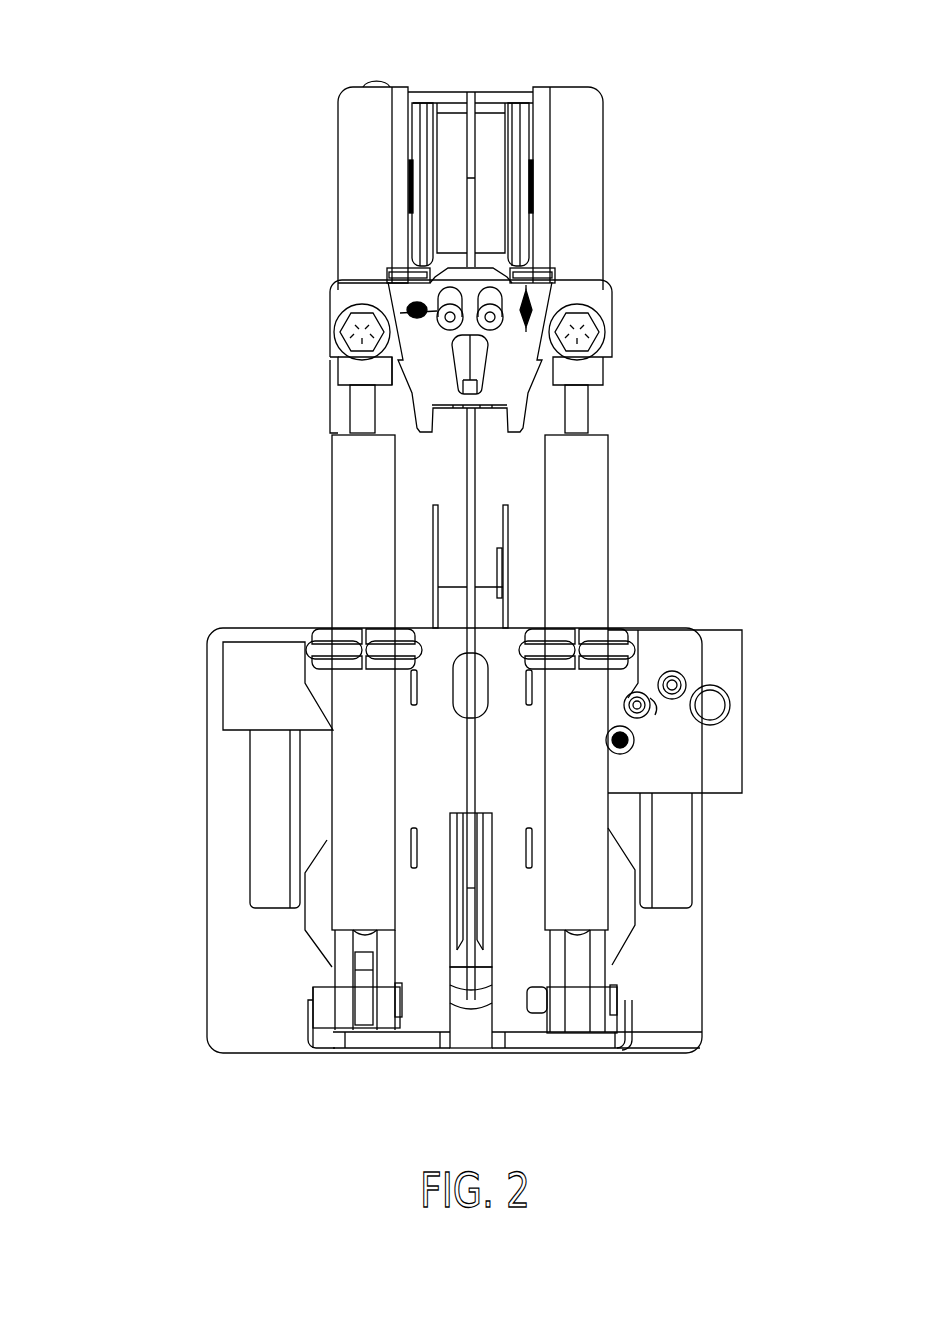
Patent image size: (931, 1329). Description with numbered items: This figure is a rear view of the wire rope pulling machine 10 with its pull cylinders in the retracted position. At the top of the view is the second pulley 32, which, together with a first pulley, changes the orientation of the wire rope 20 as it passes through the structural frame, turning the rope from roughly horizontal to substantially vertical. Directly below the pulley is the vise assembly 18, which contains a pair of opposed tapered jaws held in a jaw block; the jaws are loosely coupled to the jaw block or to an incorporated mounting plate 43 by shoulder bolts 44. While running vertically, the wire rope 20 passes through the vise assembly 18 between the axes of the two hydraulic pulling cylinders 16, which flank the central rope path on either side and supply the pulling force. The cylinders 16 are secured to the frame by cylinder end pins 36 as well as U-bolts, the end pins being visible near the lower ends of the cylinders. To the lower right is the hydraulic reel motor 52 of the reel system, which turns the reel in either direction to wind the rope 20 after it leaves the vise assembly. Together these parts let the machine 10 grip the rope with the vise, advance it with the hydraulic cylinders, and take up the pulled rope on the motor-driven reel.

The wire rope pulling machine 10 is at (165, 182).
The second pulley 32 is at (484, 132).
The shoulder bolts 44 is at (412, 310).
The vise assembly 18 is at (542, 295).
The mounting plate 43 is at (420, 370).
The hydraulic pulling cylinders 16 is at (595, 520).
The wire rope 20 is at (465, 483).
The hydraulic reel motor 52 is at (717, 645).
The cylinder end pins 36 is at (617, 998).